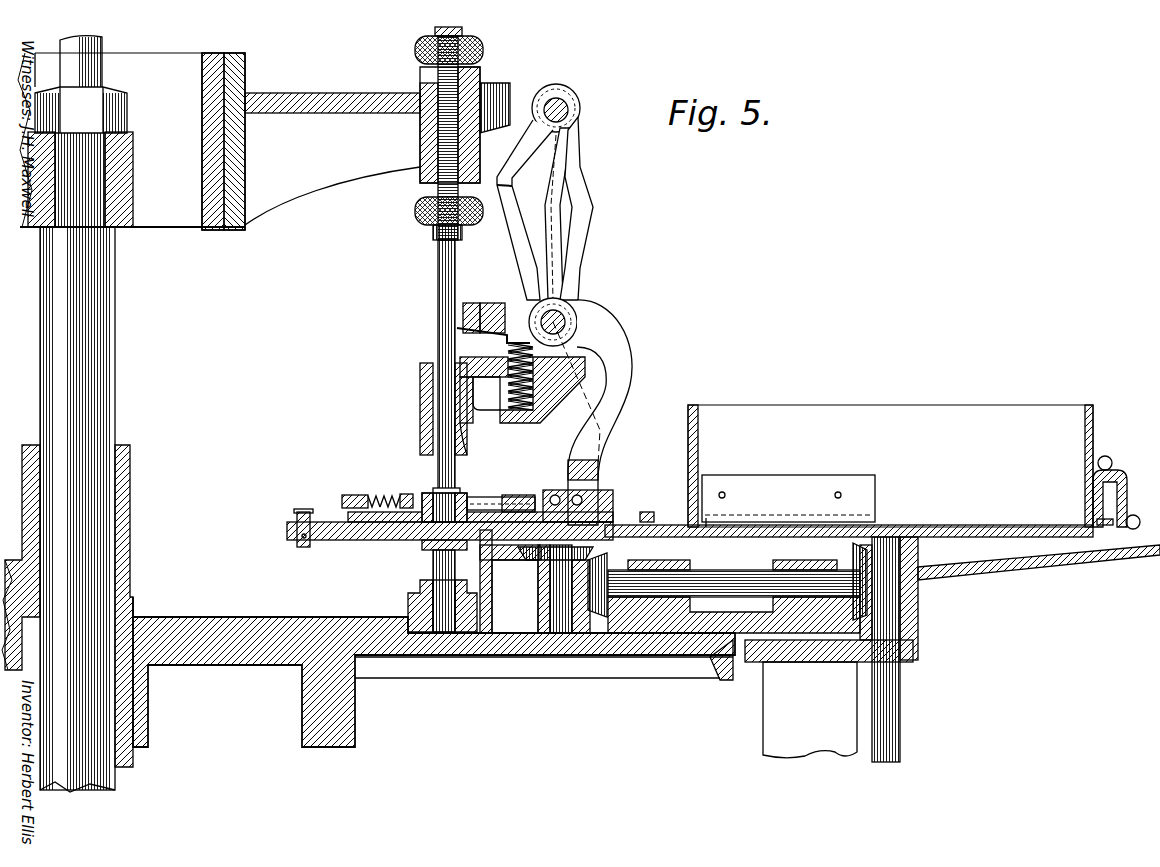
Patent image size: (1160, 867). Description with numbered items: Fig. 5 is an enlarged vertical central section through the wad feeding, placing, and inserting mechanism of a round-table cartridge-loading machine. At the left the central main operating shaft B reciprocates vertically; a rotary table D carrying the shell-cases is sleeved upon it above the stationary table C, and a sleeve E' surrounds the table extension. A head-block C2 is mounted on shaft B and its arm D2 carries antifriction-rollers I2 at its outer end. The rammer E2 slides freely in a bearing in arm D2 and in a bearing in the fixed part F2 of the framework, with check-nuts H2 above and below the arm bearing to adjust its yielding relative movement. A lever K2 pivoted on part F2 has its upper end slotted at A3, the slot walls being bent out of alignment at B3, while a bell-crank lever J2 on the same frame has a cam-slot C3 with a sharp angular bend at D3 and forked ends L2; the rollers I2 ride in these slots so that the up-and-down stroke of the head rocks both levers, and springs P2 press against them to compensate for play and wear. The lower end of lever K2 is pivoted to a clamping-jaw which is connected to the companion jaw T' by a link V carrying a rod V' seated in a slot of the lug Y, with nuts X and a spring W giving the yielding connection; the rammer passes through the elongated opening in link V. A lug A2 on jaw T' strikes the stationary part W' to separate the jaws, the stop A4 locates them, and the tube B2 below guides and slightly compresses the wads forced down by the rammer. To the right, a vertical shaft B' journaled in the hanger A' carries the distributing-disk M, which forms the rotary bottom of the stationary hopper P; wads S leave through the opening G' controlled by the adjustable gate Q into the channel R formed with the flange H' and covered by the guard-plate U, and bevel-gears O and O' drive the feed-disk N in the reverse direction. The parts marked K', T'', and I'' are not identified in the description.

The main operating shaft B is at (94, 414).
The arm D2 is at (249, 140).
The head-block C2 is at (213, 228).
The bend in slot B3 is at (512, 175).
The check-nuts H2 is at (485, 50).
The rammer E2 is at (445, 285).
The antifriction-rollers I2 is at (562, 108).
The angular bend in slot D3 is at (567, 207).
The cam-slot C3 is at (567, 230).
The slot A3 is at (530, 240).
The lever K' is at (491, 220).
The forked ends L2 is at (467, 303).
The bell-crank lever J2 is at (510, 317).
The lever K2 is at (607, 335).
The fixed part of framework F2 is at (420, 390).
The springs P2 is at (507, 350).
The slide T'' is at (480, 533).
The feed-disk N is at (655, 537).
The stop A4 is at (297, 518).
The rod V' is at (336, 497).
The nuts X is at (350, 494).
The spring W is at (383, 482).
The lug Y is at (406, 494).
The link V is at (501, 486).
The clamping-jaw T' is at (572, 488).
The wads S is at (650, 512).
The sleeve E' is at (410, 591).
The stationary part of frame W' is at (404, 555).
The tube B2 is at (420, 530).
The lug A2 is at (345, 548).
The rotary table D is at (193, 617).
The stationary table C is at (527, 648).
The bevel-gears O' is at (566, 586).
The shaft I'' is at (760, 599).
The bevel-gears O is at (844, 578).
The vertical shafts B' is at (901, 649).
The hanger A' is at (810, 710).
The distributing-disk M is at (985, 530).
The hopper P is at (1018, 410).
The adjustable gate Q is at (775, 490).
The opening G' is at (759, 505).
The flange H' is at (1120, 492).
The channel R is at (1120, 540).
The guard-plate U is at (1105, 528).